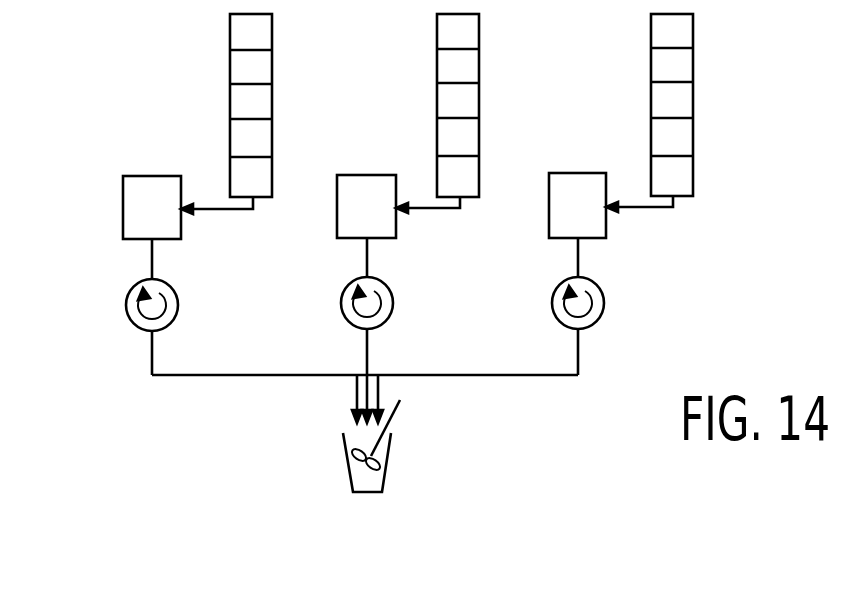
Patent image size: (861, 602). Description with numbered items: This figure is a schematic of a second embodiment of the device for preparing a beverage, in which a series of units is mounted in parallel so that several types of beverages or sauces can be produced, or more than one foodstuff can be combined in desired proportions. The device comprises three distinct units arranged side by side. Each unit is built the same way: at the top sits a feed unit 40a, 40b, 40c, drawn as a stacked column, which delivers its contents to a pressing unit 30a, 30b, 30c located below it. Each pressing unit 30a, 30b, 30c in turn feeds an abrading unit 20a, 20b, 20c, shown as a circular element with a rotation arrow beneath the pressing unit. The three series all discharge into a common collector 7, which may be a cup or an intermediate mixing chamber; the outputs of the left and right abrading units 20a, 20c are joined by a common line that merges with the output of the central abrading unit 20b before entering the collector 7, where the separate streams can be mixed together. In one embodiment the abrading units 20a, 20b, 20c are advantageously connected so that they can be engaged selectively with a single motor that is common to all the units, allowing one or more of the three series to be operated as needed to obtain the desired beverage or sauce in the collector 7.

The feed unit 40a is at (284, 78).
The feed unit 40b is at (500, 82).
The feed unit 40c is at (704, 86).
The pressing unit 30a is at (128, 162).
The pressing unit 30b is at (381, 160).
The pressing unit 30c is at (596, 158).
The abrading unit 20a is at (115, 315).
The abrading unit 20b is at (328, 314).
The abrading unit 20c is at (538, 314).
The common collector 7 is at (332, 459).